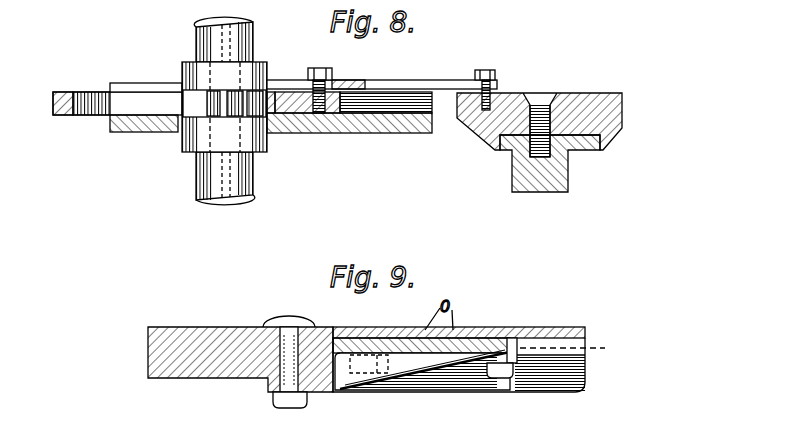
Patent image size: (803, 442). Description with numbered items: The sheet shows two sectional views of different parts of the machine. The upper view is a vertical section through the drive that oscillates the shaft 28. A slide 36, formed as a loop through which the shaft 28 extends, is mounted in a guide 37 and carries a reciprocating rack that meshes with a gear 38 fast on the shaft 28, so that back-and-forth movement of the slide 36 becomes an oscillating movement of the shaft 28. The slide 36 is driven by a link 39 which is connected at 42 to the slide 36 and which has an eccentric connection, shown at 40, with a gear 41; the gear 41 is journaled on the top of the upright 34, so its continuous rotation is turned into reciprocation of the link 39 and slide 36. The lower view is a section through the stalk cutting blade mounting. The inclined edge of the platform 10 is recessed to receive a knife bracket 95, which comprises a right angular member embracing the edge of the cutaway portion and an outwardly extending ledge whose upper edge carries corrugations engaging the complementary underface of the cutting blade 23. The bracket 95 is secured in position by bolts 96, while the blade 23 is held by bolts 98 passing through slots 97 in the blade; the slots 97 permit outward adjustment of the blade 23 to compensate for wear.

In FIG. 8, the shaft 28 is at (208, 27).
In FIG. 8, the slide 36 is at (73, 92).
In FIG. 8, the guide 37 is at (147, 125).
In FIG. 8, the gear 38 is at (203, 100).
In FIG. 8, the link 39 is at (409, 81).
In FIG. 8, the eccentric connection 40 is at (493, 80).
In FIG. 8, the gear 41 is at (598, 102).
In FIG. 8, the connection 42 is at (318, 68).
In FIG. 8, the upright 34 is at (556, 184).
In FIG. 9, the platform 10 is at (172, 381).
In FIG. 9, the cutting blade 23 is at (555, 328).
In FIG. 9, the bolt 96 is at (287, 372).
In FIG. 9, the knife bracket 95 is at (353, 383).
In FIG. 9, the bolt 98 is at (400, 378).
In FIG. 9, the slot 97 is at (577, 351).